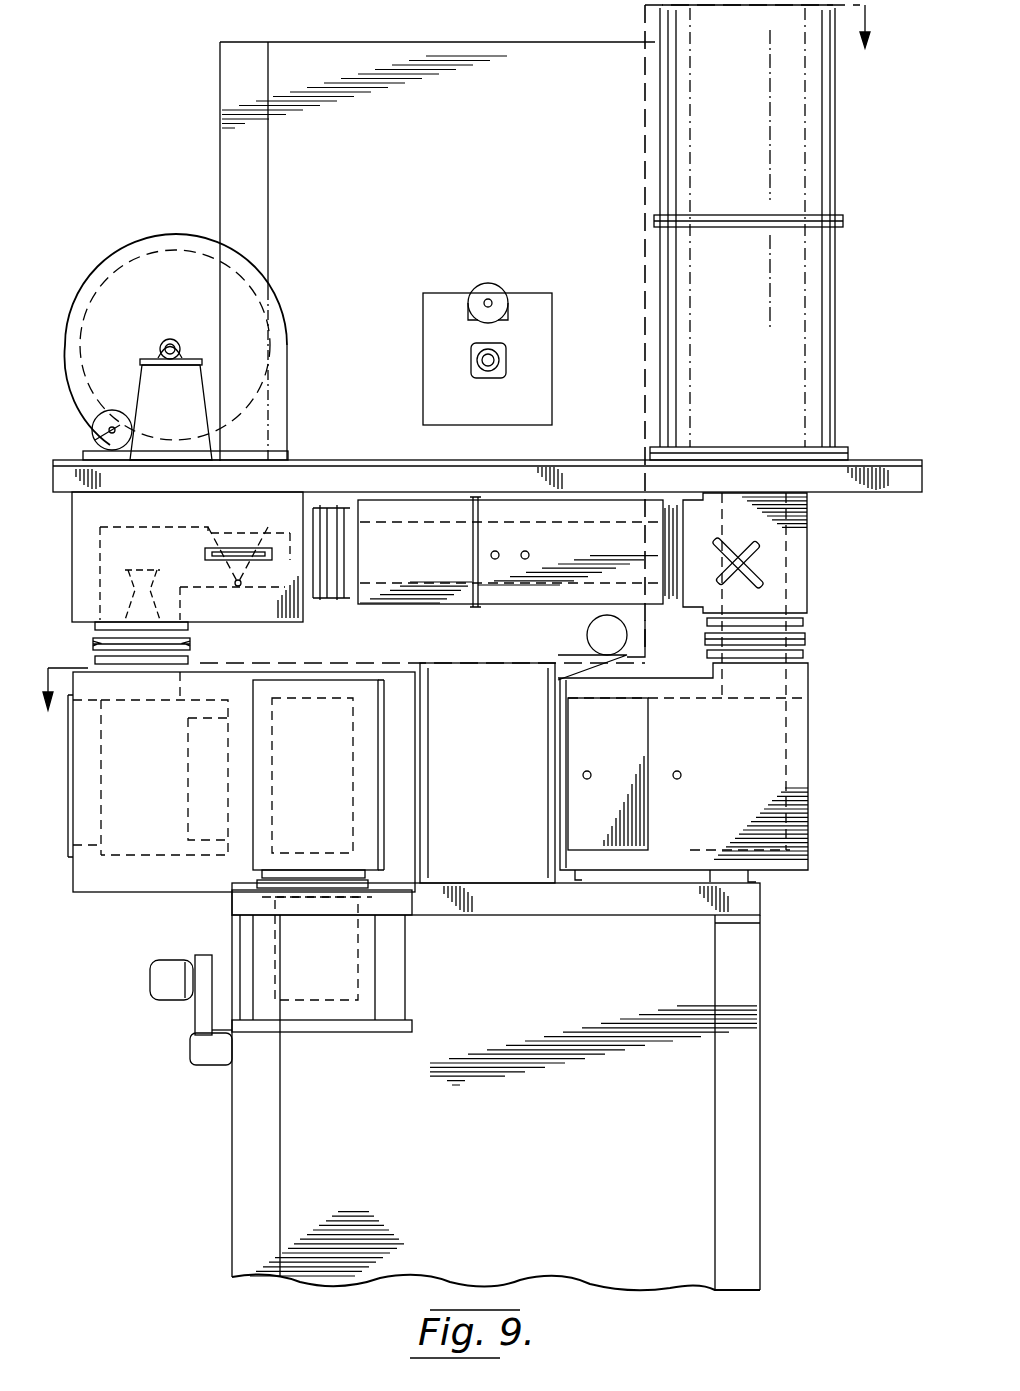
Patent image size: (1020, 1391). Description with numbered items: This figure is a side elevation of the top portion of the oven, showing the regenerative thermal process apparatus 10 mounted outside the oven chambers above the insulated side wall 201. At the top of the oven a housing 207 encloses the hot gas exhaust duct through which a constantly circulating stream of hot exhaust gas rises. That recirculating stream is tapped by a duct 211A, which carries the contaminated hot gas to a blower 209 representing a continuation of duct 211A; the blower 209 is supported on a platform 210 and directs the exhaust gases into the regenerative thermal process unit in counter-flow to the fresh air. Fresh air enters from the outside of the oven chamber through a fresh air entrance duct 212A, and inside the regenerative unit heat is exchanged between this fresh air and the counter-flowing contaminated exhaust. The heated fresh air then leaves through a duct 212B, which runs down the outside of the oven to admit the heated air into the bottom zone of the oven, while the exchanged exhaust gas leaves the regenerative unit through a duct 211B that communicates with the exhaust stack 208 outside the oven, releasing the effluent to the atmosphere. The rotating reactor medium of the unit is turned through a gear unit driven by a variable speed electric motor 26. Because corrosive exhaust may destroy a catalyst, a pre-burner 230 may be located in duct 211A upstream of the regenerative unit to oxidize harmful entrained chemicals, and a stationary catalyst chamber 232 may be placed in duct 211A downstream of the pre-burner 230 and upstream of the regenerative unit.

The thermal regeneration and decontamination apparatus 10 is at (470, 356).
The variable speed electric motor 26 is at (586, 636).
The insulated side wall 201 is at (372, 1262).
The housing 207 is at (346, 50).
The exhaust stack 208 is at (838, 156).
The blower 209 is at (135, 245).
The platform 210 is at (868, 460).
The duct 211A is at (276, 462).
The duct 211B is at (810, 740).
The fresh air entrance duct 212A is at (652, 800).
The duct 212B is at (430, 830).
The pre-burner 230 is at (178, 562).
The static catalyst chamber 232 is at (208, 790).